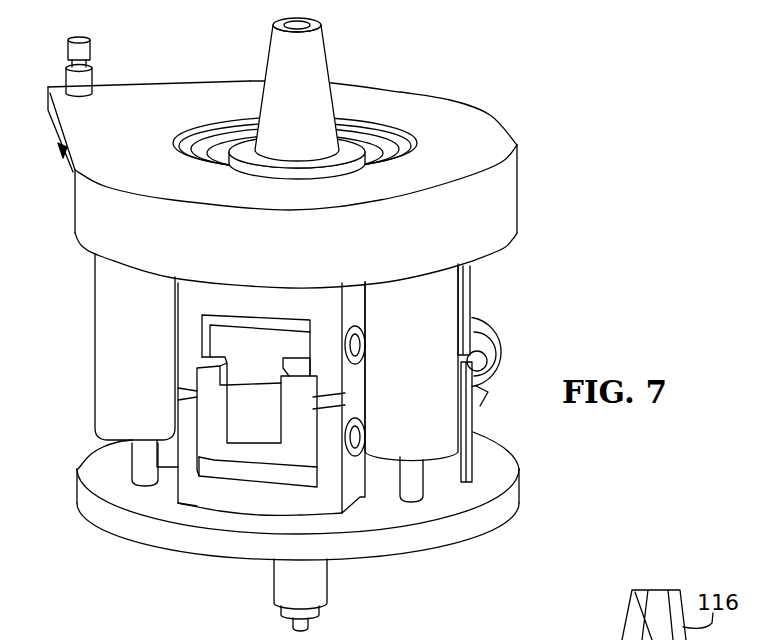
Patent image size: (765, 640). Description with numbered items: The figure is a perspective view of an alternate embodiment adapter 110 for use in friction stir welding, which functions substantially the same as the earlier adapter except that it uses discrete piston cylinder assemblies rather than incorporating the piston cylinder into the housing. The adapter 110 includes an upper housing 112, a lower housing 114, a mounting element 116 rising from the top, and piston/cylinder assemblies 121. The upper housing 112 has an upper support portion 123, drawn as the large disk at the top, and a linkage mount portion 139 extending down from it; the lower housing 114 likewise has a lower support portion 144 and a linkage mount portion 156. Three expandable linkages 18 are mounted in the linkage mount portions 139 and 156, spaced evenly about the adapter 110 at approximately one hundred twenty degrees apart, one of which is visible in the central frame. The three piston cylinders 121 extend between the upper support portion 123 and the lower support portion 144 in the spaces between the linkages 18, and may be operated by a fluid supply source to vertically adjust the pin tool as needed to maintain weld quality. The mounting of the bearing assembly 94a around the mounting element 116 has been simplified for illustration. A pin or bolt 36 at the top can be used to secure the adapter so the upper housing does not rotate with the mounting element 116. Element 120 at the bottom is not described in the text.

The adapter 110 is at (600, 48).
The upper housing 112 is at (540, 178).
The upper support portion 123 is at (511, 215).
The mounting element 116 is at (317, 53).
The bearing assembly 94a is at (386, 152).
The pin or bolt 36 is at (84, 78).
The piston/cylinder assemblies 121 is at (123, 363).
The linkage mount portion 139 is at (190, 297).
The expandable linkages 18 is at (230, 478).
The linkage mount portion 156 is at (251, 498).
The lower housing 114 is at (545, 489).
The lower support portion 144 is at (487, 517).
The nozzle / stem 120 is at (305, 581).